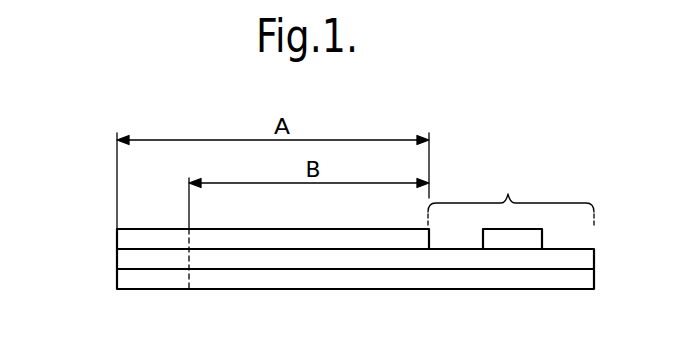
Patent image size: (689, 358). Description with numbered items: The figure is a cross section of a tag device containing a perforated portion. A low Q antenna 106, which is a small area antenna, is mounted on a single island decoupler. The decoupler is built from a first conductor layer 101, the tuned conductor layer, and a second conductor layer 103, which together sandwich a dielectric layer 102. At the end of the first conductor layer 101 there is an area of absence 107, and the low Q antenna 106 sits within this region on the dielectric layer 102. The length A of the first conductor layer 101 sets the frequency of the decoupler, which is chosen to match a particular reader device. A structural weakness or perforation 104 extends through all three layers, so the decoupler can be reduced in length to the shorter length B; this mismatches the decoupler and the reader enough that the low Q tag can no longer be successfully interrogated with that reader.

The first conductor layer 101 is at (120, 236).
The dielectric layer 102 is at (120, 258).
The second conductor layer 103 is at (120, 280).
The perforation 104 is at (189, 270).
The low Q antenna 106 is at (523, 238).
The area of absence 107 is at (508, 194).